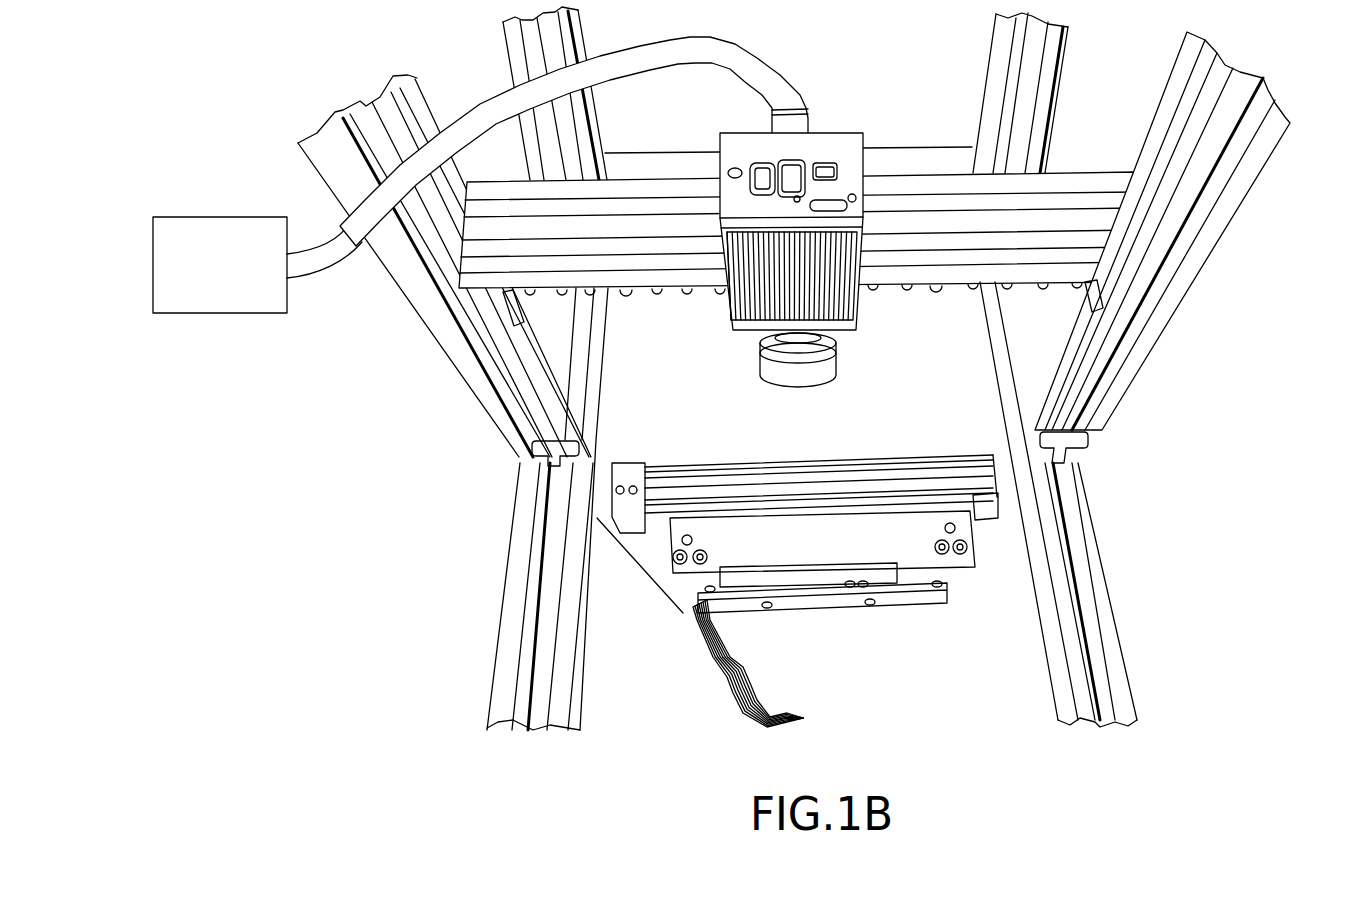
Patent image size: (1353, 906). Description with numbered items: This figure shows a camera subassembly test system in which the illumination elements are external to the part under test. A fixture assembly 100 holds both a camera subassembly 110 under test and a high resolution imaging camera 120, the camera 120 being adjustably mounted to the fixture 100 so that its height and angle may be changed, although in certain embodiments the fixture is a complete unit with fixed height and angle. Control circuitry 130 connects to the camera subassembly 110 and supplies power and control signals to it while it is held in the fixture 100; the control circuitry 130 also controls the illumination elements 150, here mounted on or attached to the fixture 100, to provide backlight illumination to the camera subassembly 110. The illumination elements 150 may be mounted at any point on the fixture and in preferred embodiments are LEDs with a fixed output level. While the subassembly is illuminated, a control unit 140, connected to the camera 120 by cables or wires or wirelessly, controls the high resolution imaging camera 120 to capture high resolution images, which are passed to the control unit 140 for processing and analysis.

The fixture assembly 100 is at (1087, 185).
The camera subassembly 110 is at (635, 570).
The high resolution imaging camera 120 is at (762, 345).
The control circuitry 130 is at (730, 703).
The control unit 140 is at (234, 274).
The illumination elements 150 is at (627, 293).